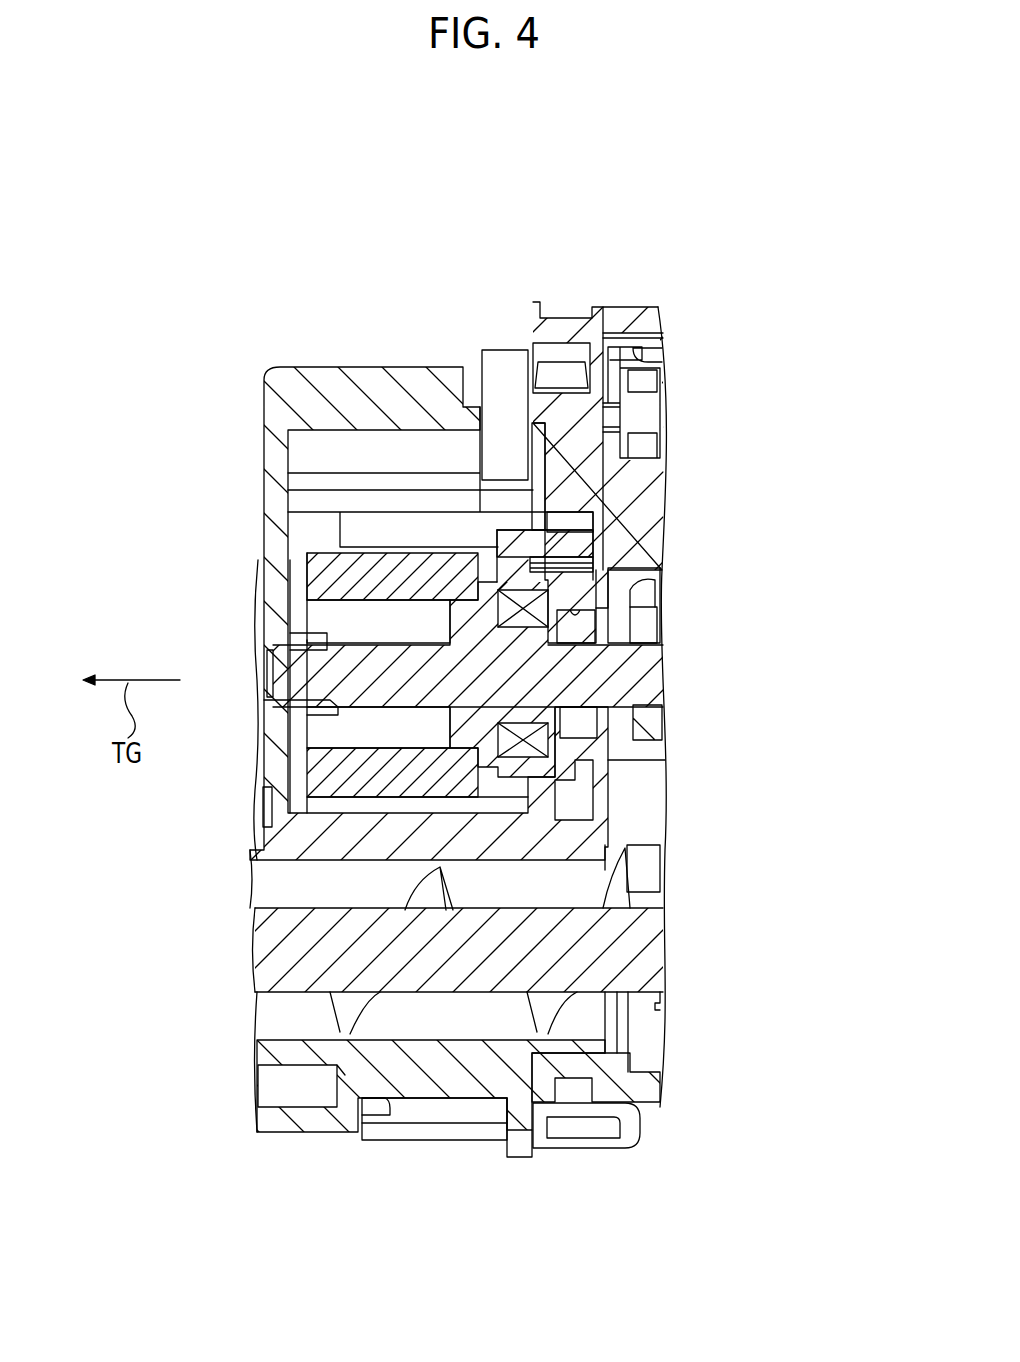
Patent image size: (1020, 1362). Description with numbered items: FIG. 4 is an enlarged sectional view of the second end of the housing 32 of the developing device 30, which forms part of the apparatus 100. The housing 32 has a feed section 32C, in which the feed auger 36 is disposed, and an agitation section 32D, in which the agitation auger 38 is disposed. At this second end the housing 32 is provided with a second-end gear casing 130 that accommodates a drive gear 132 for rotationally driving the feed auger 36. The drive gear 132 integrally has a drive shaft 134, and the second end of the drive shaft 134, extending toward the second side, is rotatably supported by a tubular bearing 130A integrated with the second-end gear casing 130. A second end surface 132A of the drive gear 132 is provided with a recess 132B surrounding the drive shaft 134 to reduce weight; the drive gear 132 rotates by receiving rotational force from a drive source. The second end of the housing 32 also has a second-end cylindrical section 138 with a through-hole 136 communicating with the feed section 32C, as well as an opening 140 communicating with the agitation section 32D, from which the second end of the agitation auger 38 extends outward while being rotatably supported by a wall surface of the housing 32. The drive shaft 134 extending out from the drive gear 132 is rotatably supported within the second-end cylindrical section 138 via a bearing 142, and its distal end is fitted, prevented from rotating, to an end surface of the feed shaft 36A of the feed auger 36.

The developing device 30 is at (654, 128).
The drive device 100 is at (614, 238).
The housing 32 is at (520, 312).
The feed section 32C is at (632, 585).
The agitation section 32D is at (648, 1046).
The feed auger 36 is at (678, 618).
The feed shaft 36A is at (645, 635).
The agitation auger 38 is at (692, 943).
The second-end gear casing 130 is at (263, 362).
The tubular bearing 130A is at (316, 640).
The drive gear 132 is at (335, 568).
The second end surface 132A is at (310, 769).
The recess 132B is at (335, 733).
The drive shaft 134 is at (638, 683).
The through-hole 136 is at (612, 570).
The second-end cylindrical section 138 is at (603, 597).
The opening 140 is at (605, 1056).
The bearing 142 is at (523, 585).